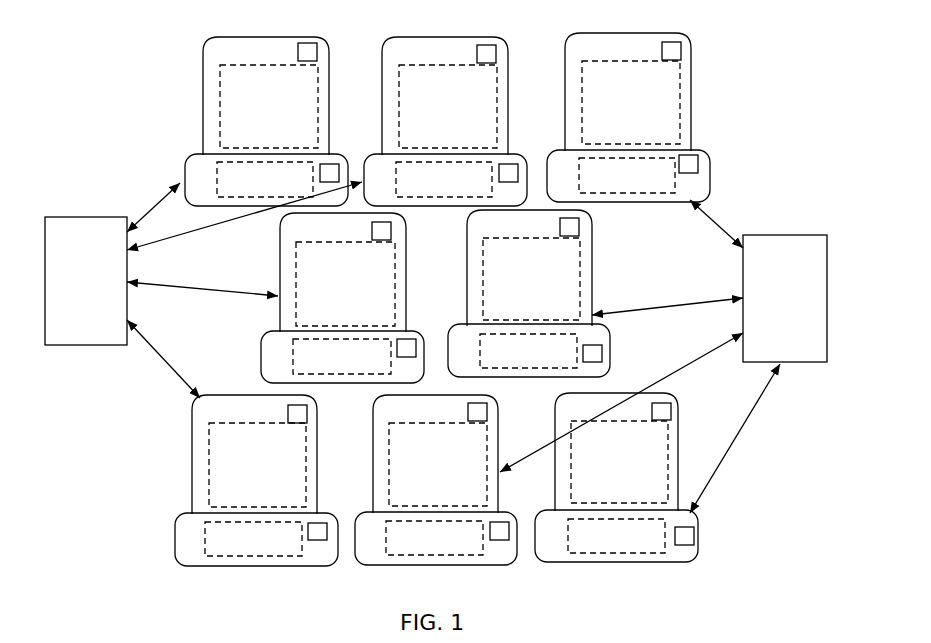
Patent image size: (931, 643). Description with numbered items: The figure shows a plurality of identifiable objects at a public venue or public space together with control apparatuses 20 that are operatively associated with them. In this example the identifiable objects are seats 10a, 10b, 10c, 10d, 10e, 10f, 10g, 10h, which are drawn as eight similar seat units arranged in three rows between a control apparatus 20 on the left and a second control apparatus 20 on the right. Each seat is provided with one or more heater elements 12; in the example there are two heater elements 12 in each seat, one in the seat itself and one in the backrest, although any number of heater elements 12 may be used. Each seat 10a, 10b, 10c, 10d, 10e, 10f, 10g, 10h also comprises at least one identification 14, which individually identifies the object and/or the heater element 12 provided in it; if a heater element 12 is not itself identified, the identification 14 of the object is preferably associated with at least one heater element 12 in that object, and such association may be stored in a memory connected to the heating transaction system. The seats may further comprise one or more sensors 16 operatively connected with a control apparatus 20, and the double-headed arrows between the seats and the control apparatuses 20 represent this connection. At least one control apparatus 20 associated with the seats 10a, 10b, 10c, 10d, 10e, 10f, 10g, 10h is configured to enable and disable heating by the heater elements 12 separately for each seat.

The seat 10a is at (251, 113).
The seat 10b is at (428, 113).
The seat 10c is at (612, 108).
The seat 10d is at (320, 298).
The seat 10e is at (553, 293).
The seat 10f is at (232, 480).
The seat 10g is at (413, 478).
The seat 10h is at (595, 473).
The heater element 12 is at (415, 308).
The identification 14 is at (492, 231).
The sensor 16 is at (532, 337).
The control apparatus 20 is at (70, 225).